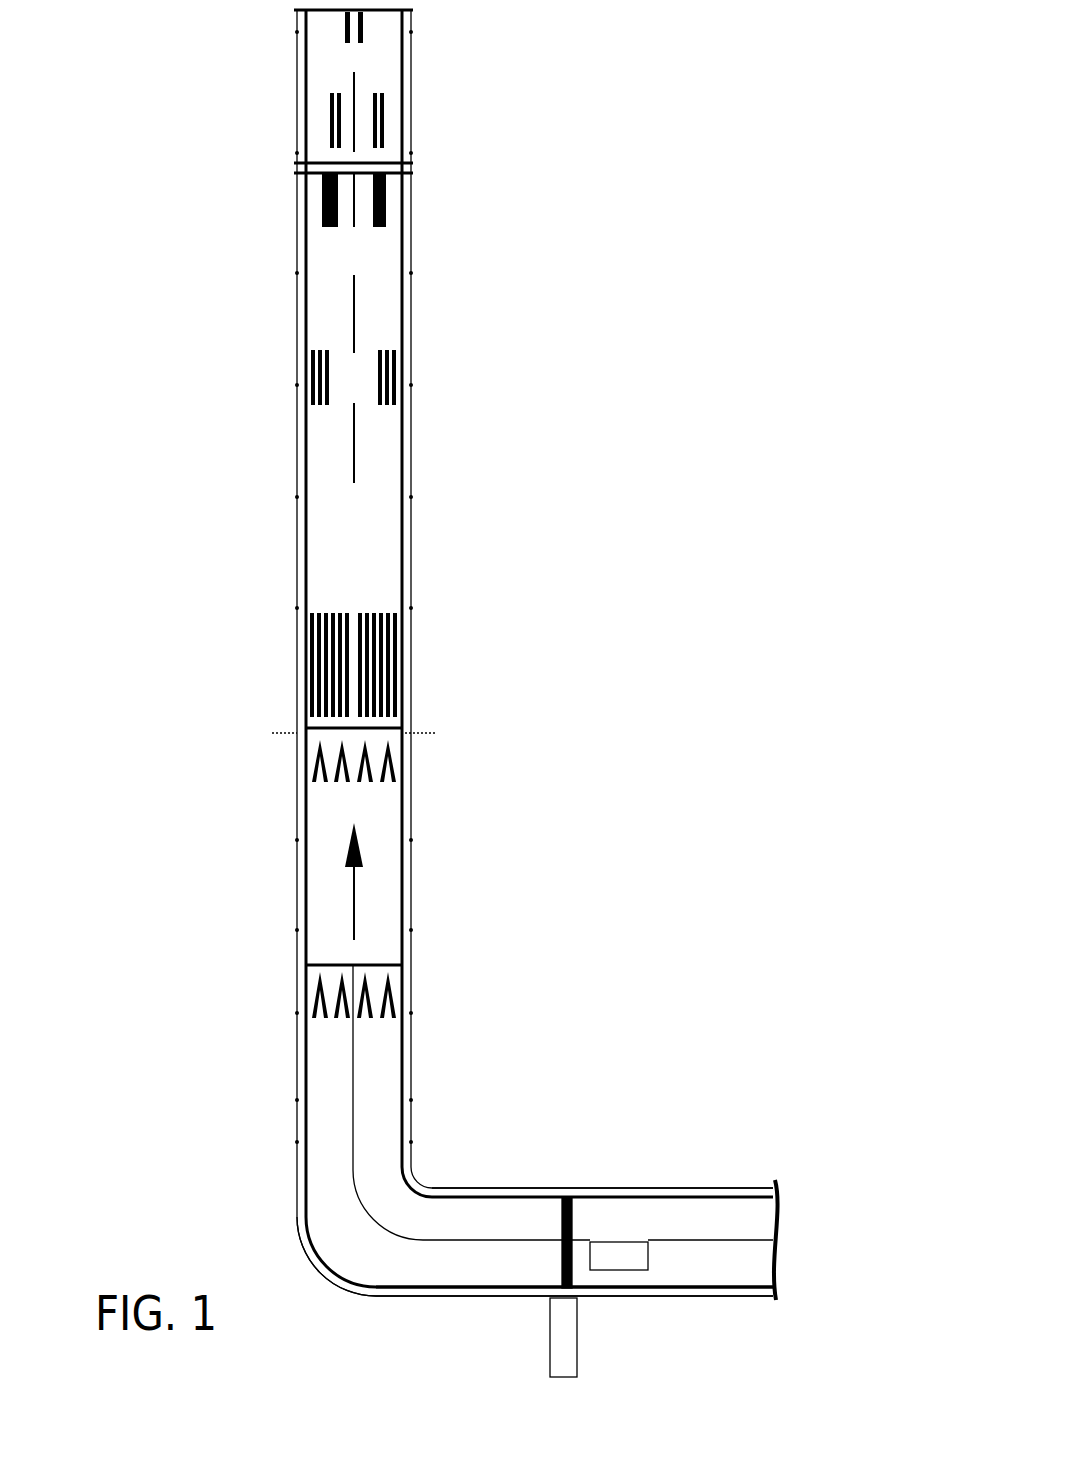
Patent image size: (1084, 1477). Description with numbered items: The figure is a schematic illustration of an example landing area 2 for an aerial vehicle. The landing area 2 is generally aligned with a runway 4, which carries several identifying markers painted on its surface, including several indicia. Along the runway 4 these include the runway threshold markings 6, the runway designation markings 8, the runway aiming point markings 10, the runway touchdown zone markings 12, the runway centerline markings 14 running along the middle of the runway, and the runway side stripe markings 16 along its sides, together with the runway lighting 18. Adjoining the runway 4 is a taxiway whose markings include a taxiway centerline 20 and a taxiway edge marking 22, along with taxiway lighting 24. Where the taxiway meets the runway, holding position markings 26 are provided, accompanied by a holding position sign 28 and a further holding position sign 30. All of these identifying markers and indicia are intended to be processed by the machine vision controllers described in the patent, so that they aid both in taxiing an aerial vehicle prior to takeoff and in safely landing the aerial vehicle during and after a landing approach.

The landing area 2 is at (495, 1171).
The runway 4 is at (494, 653).
The runway threshold markings 6 is at (385, 724).
The runway designation markings 8 is at (372, 537).
The runway aiming point markings 10 is at (388, 212).
The runway touchdown zone markings 12 is at (340, 30).
The runway centerline markings 14 is at (355, 447).
The runway side stripe markings 16 is at (412, 335).
The runway lighting 18 is at (297, 500).
The taxiway centerline 20 is at (355, 1100).
The taxiway edge marking 22 is at (430, 1190).
The taxiway lighting 24 is at (445, 1297).
The holding position markings 26 is at (570, 1197).
The holding position sign 28 is at (625, 1270).
The holding position sign 30 is at (548, 1330).